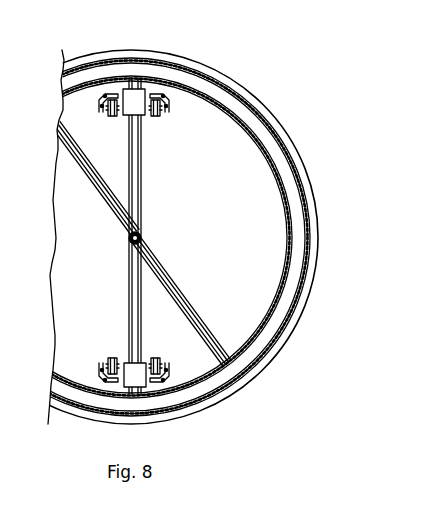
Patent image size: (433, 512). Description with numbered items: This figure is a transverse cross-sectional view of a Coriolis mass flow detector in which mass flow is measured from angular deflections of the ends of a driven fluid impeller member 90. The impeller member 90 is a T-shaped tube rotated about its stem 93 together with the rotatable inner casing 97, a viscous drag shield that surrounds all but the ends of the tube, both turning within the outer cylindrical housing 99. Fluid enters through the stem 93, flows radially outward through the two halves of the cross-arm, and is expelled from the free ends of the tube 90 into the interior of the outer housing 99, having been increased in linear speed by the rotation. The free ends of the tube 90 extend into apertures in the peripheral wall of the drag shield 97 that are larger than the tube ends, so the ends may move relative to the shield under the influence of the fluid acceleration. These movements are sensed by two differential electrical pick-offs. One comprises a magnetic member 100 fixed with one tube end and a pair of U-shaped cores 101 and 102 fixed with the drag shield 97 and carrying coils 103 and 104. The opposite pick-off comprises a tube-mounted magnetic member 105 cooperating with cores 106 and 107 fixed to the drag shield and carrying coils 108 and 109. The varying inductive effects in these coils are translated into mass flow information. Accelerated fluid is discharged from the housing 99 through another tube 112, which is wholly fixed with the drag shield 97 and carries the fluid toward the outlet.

The driven fluid impeller member 90 is at (136, 186).
The stem 93 is at (141, 237).
The inner casing 97 is at (268, 157).
The outer cylindrical housing 99 is at (159, 237).
The magnetic member 100 is at (134, 104).
The U-shaped core 101 is at (108, 97).
The U-shaped core 102 is at (164, 99).
The coil 103 is at (112, 116).
The coil 104 is at (156, 116).
The tube-mounted magnetic member 105 is at (137, 377).
The core 106 is at (108, 379).
The core 107 is at (170, 379).
The coil 108 is at (112, 358).
The coil 109 is at (158, 358).
The tube 112 is at (192, 306).